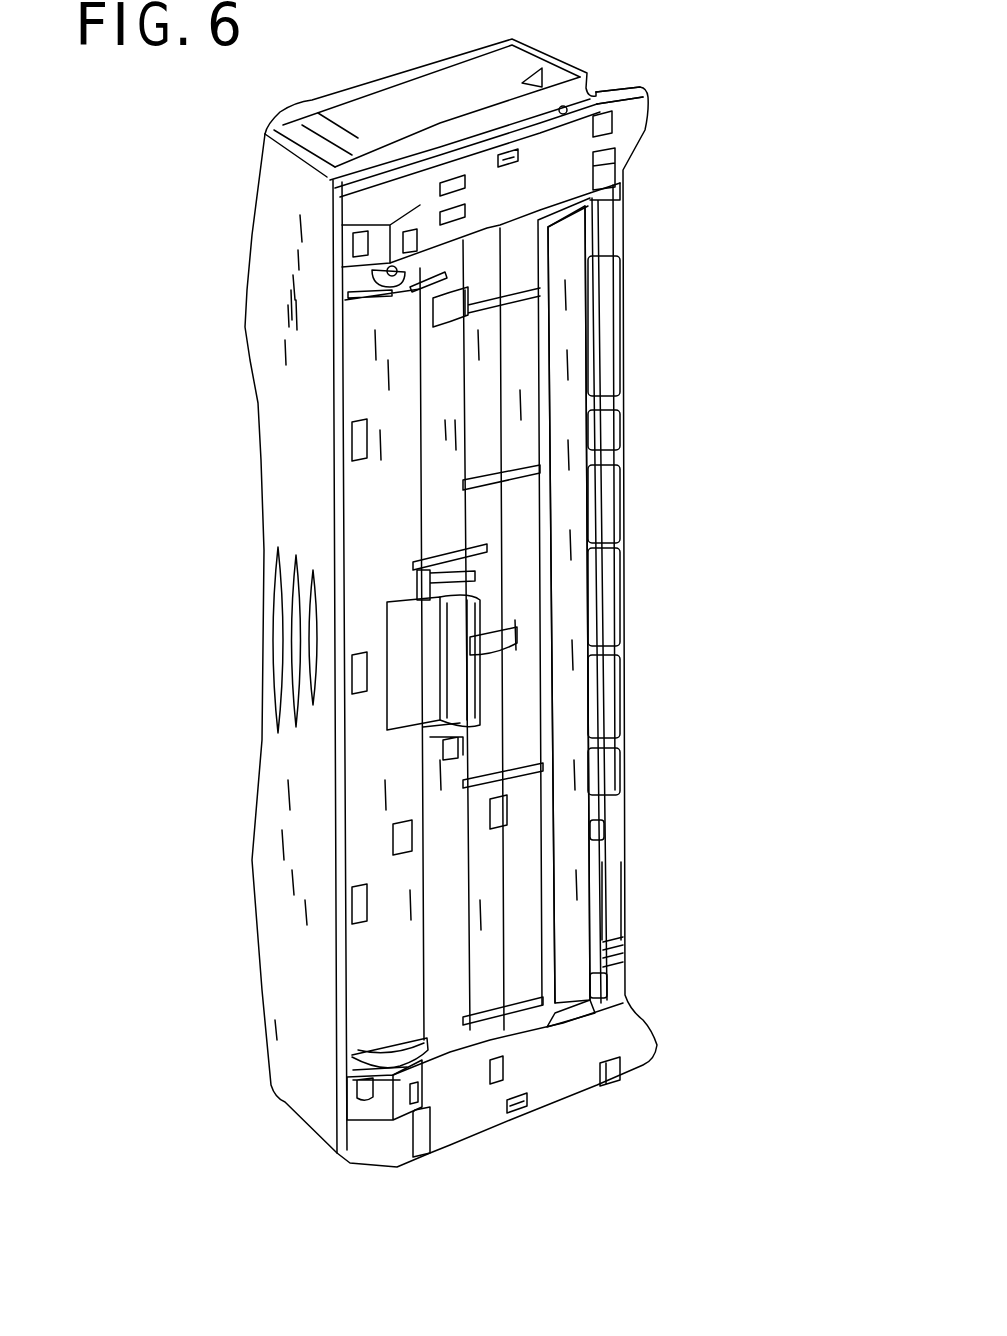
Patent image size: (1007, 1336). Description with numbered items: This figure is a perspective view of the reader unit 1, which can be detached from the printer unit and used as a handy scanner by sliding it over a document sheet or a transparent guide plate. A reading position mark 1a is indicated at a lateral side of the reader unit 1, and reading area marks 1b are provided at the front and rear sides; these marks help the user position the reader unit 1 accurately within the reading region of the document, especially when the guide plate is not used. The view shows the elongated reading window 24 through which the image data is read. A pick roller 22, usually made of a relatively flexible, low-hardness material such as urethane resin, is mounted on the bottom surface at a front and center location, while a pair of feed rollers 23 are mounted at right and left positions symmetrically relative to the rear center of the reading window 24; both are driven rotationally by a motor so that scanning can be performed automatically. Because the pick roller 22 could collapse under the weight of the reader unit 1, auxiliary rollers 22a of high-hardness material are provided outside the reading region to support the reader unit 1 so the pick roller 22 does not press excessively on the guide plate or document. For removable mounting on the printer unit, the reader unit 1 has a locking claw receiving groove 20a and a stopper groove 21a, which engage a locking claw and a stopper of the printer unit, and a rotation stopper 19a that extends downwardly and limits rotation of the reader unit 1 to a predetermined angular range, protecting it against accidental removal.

The reader unit 1 is at (451, 603).
The reading position mark 1a is at (582, 76).
The reading area mark 1b is at (288, 992).
The rotation stopper 19a is at (633, 118).
The locking claw receiving groove 20a is at (357, 203).
The stopper groove 21a is at (483, 152).
The pick roller 22 is at (447, 627).
The auxiliary roller 22a is at (377, 279).
The feed roller 23 is at (610, 693).
The reading window 24 is at (570, 330).